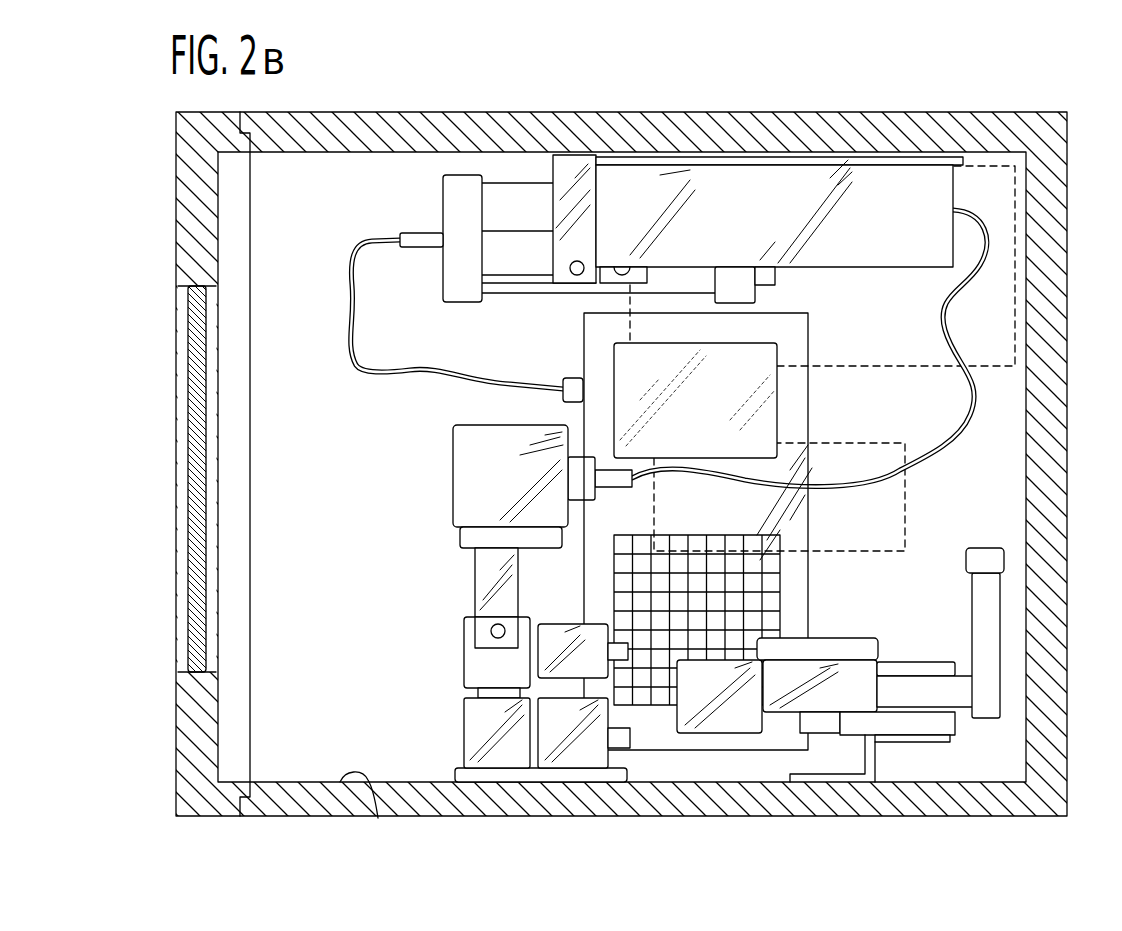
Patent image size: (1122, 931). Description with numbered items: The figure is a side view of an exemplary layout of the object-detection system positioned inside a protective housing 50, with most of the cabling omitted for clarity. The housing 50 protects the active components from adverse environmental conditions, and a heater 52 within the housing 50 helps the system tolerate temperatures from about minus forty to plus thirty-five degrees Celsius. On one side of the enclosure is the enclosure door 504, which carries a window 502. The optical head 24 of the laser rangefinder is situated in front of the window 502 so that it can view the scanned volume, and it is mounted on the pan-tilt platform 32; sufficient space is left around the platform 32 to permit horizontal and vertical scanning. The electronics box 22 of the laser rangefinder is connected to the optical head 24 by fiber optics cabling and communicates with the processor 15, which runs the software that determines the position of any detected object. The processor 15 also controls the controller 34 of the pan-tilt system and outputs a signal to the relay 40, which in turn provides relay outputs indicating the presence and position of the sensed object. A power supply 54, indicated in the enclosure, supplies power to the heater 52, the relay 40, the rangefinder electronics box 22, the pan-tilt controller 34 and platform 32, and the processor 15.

The processor 15 is at (810, 396).
The electronics box portion 22 is at (454, 203).
The optical head portion 24 is at (492, 479).
The pan-tilt platform 32 is at (490, 670).
The controller portion 34 is at (912, 516).
The relay 40 is at (796, 198).
The housing 50 is at (437, 115).
The heater 52 is at (878, 726).
The power supply 54 is at (1022, 212).
The window 502 is at (196, 510).
The enclosure door 504 is at (371, 812).